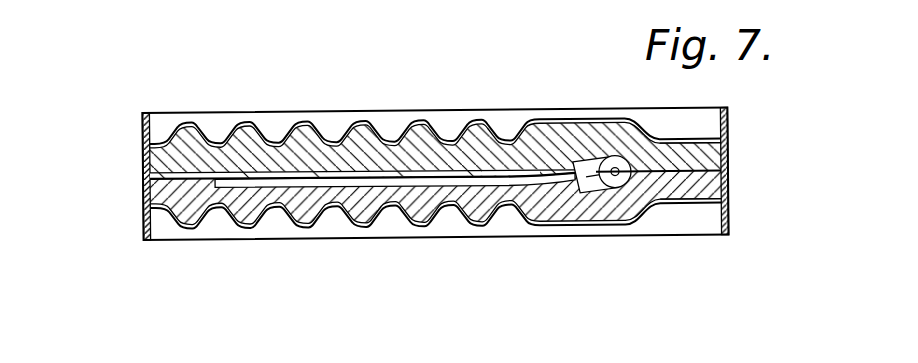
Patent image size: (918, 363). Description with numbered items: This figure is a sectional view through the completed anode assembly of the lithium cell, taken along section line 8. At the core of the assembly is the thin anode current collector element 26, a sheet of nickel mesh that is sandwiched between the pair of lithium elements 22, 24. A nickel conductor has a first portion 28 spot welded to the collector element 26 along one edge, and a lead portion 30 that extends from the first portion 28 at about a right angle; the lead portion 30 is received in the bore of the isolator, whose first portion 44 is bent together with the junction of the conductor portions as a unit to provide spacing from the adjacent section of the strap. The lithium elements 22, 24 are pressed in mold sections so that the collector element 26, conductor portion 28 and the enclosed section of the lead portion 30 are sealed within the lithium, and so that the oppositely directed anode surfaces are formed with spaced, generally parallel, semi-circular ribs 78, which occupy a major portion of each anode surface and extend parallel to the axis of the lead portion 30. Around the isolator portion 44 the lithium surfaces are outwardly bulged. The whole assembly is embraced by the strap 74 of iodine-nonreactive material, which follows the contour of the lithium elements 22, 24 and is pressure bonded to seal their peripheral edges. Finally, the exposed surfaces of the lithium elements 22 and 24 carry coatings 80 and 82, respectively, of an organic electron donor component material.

The section line 8- 8 is at (397, 362).
The strap 74 is at (728, 133).
The coating 82 is at (254, 128).
The coating 80 is at (347, 223).
The lithium element 24 is at (326, 140).
The lithium element 22 is at (282, 211).
The first portion of conductor 28 is at (532, 182).
The anode current collector element 26 is at (206, 214).
The lead portion of conductor 30 is at (604, 198).
The first portion of isolator 44 is at (608, 168).
The ribs 78 is at (425, 141).